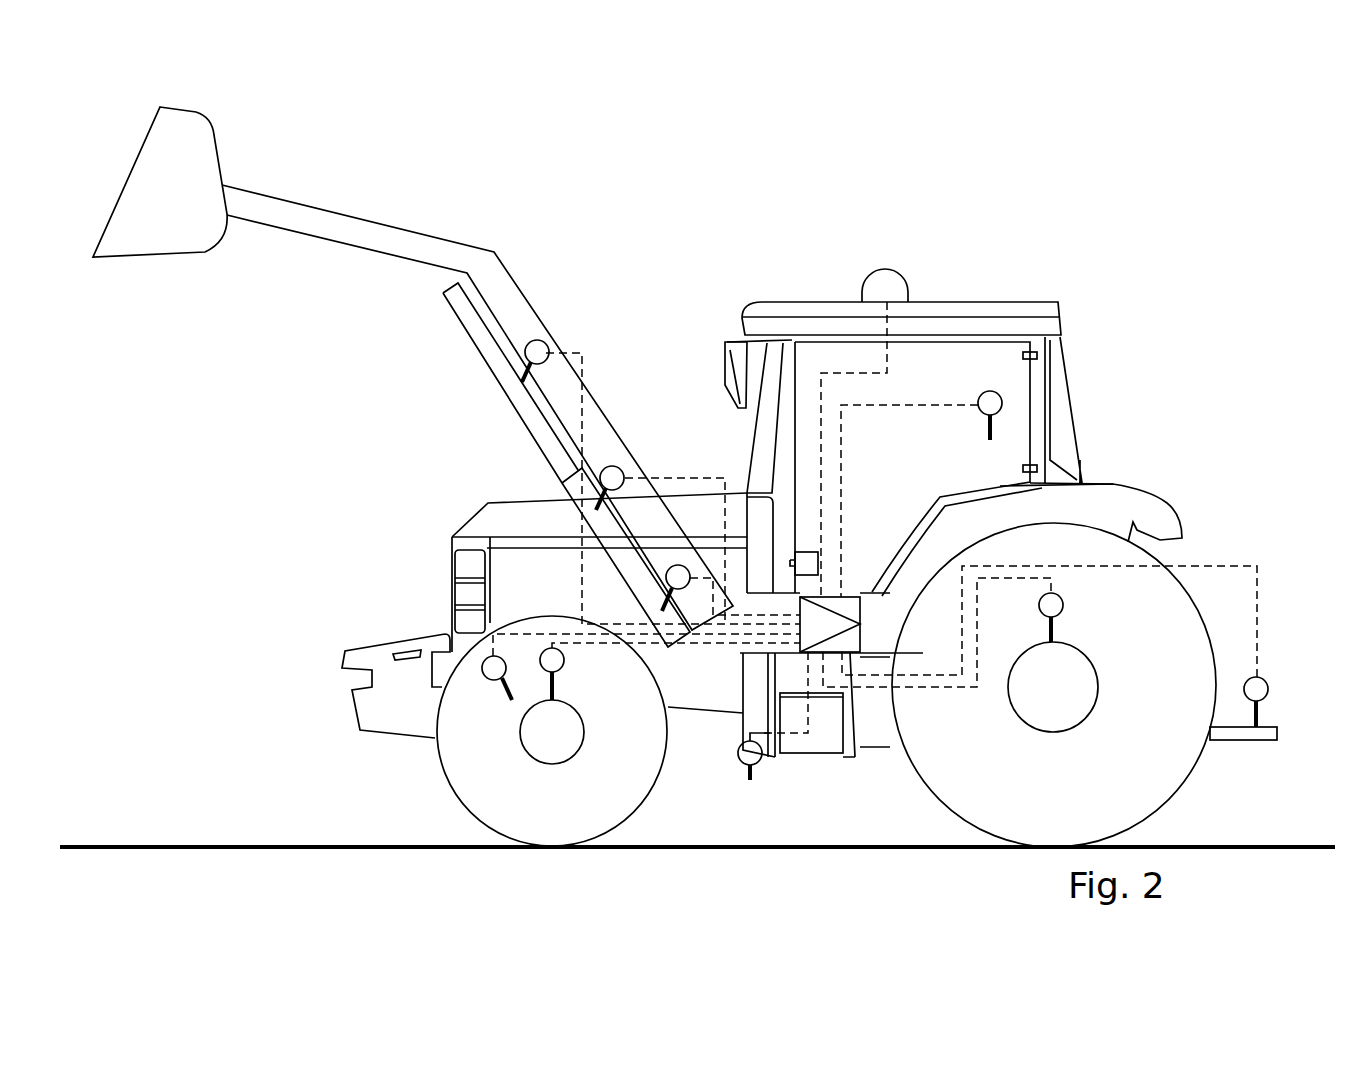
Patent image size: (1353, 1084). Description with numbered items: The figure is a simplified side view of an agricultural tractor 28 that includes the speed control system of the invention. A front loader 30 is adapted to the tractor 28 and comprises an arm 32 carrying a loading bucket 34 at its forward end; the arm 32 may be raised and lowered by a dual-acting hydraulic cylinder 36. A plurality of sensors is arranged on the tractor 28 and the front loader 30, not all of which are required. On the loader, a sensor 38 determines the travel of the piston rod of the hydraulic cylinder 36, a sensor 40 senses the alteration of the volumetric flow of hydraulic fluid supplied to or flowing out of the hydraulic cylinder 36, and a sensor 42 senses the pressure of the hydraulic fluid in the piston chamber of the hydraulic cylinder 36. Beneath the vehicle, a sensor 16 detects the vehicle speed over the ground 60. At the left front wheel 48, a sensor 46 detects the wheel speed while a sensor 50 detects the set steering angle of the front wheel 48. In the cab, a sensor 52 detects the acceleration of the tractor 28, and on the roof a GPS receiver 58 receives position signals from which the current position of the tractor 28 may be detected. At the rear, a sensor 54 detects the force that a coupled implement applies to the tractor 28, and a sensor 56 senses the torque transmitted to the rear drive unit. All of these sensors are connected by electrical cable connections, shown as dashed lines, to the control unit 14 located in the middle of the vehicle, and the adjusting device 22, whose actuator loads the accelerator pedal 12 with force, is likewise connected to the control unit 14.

The pedal 12 is at (858, 537).
The control unit 14 is at (829, 638).
The sensor 16 is at (740, 757).
The adjusting device 22 is at (807, 552).
The tractor 28 is at (982, 281).
The front loader 30 is at (423, 202).
The arm 32 is at (283, 210).
The loading bucket 34 is at (190, 200).
The hydraulic cylinder 36 is at (566, 487).
The sensor 38 is at (546, 344).
The sensor 40 is at (618, 470).
The sensor 42 is at (676, 566).
The sensor 46 is at (563, 665).
The front wheel 48 is at (468, 785).
The sensor 50 is at (484, 678).
The sensor 52 is at (984, 391).
The sensor 54 is at (1267, 686).
The sensor 56 is at (1063, 601).
The GPS receiver 58 is at (907, 276).
The ground 60 is at (188, 843).